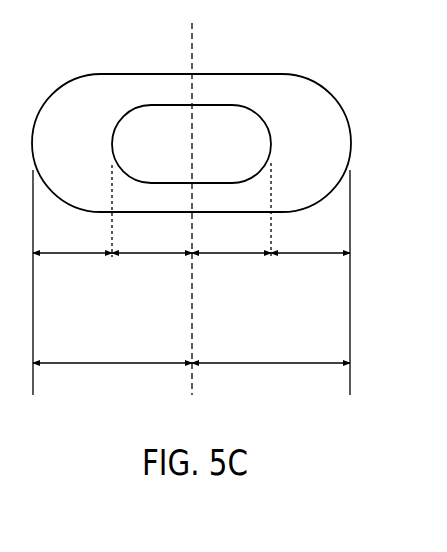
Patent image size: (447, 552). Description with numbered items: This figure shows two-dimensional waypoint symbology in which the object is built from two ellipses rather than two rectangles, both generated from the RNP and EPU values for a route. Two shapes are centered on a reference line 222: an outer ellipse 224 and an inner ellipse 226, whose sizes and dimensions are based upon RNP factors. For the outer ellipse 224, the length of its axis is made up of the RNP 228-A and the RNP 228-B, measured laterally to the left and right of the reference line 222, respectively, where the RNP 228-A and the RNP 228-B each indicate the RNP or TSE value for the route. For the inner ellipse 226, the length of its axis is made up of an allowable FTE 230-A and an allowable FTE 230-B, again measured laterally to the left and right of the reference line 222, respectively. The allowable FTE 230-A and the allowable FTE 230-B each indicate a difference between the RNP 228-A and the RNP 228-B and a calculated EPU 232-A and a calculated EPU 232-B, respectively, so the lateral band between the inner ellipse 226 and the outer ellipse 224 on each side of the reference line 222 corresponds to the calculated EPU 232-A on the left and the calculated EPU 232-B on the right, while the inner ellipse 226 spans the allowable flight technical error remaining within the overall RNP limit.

The reference line 222 is at (192, 40).
The outer ellipse 224 is at (73, 80).
The inner ellipse 226 is at (123, 114).
The RNP 228-A is at (105, 367).
The RNP 228-B is at (271, 367).
The allowable FTE 230-A is at (148, 257).
The allowable FTE 230-B is at (235, 257).
The calculated EPU 232-A is at (72, 257).
The calculated EPU 232-B is at (311, 257).